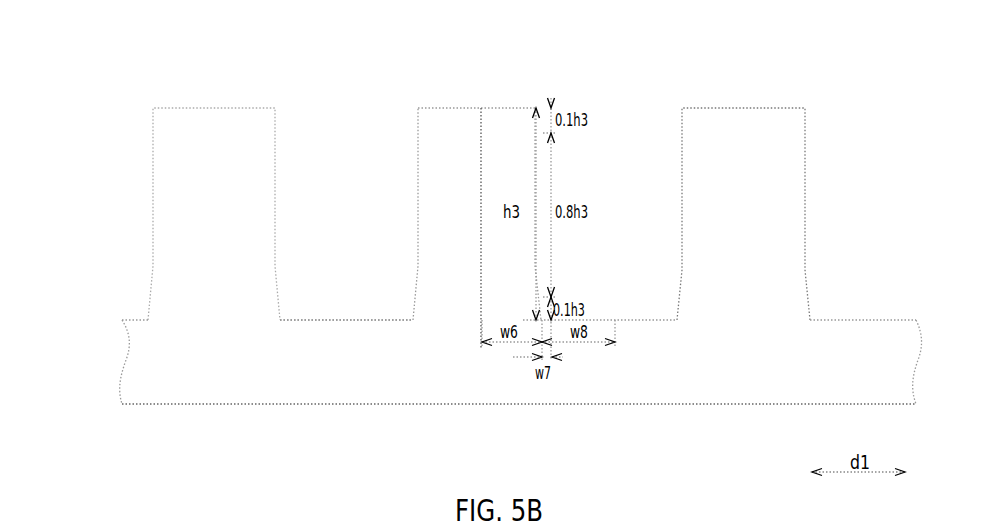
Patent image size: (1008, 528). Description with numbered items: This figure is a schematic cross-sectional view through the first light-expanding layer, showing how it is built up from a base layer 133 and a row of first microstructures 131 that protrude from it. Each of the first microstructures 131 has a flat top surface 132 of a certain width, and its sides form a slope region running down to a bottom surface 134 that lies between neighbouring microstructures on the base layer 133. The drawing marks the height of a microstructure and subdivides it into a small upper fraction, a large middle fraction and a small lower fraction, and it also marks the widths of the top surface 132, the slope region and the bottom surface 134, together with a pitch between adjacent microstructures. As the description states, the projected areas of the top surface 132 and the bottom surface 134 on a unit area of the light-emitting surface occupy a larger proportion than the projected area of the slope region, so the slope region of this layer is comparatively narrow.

The first microstructures 131 is at (436, 181).
The top surface 132 is at (466, 108).
The base layer 133 is at (122, 320).
The bottom surface 134 is at (357, 319).